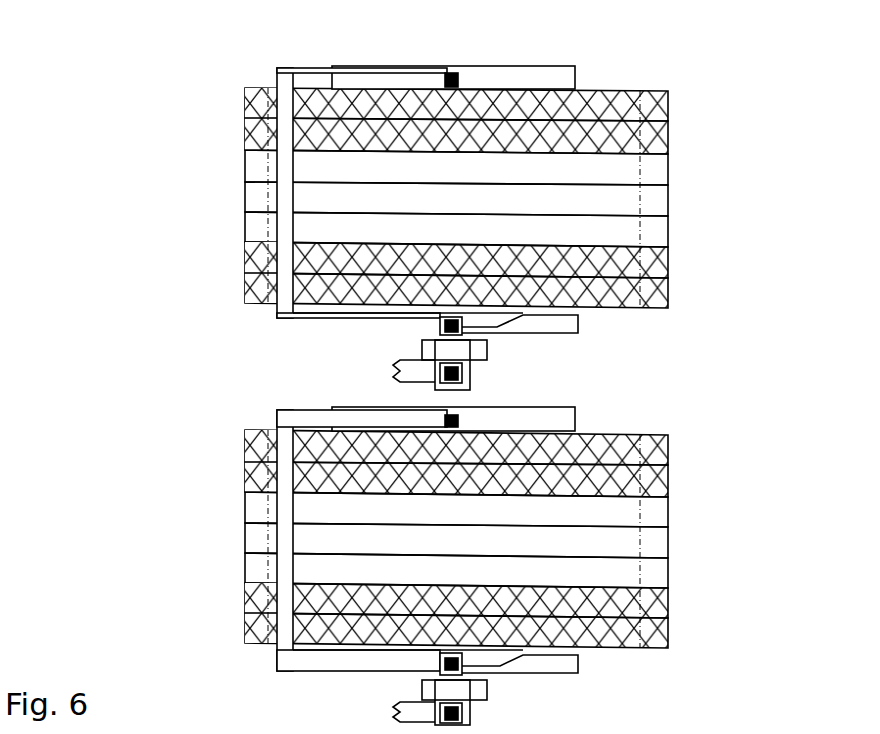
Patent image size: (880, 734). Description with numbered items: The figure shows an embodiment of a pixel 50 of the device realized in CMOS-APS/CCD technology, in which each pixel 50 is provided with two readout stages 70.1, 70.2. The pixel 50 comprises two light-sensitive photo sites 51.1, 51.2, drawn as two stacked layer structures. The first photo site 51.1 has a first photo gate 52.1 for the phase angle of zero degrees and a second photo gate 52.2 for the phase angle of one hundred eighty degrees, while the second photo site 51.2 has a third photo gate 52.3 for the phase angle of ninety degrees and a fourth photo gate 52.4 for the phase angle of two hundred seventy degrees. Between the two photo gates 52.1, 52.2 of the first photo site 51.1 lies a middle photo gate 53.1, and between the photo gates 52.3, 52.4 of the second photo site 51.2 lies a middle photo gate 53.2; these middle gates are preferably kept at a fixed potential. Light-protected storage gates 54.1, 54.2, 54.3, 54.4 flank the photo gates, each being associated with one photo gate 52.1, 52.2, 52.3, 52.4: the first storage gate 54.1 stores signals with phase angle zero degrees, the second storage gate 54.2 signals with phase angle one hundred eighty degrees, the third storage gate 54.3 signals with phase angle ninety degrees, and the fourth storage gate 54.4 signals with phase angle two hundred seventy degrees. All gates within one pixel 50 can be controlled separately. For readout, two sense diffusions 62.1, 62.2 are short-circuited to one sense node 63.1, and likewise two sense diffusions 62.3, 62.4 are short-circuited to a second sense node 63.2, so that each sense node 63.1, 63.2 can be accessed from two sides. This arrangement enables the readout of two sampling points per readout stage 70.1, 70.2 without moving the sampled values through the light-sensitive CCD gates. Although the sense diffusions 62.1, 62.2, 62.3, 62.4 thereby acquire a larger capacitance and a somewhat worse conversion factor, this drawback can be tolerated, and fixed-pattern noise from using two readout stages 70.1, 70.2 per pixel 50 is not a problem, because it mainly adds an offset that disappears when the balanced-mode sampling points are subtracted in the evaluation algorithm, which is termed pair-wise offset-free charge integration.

The pixel 50 is at (201, 87).
The first photo site 51.1 is at (406, 199).
The second photo site 51.2 is at (406, 540).
The first photo gate 52.1 is at (255, 173).
The second photo gate 52.2 is at (255, 229).
The third photo gate 52.3 is at (255, 512).
The fourth photo gate 52.4 is at (255, 568).
The middle photo gate 53.1 is at (255, 197).
The middle photo gate 53.2 is at (255, 535).
The first storage gate 54.1 is at (245, 135).
The second storage gate 54.2 is at (245, 262).
The third storage gate 54.3 is at (245, 475).
The fourth storage gate 54.4 is at (245, 597).
The sense diffusion 62.1 is at (562, 80).
The sense diffusion 62.2 is at (567, 316).
The sense diffusion 62.3 is at (577, 421).
The sense diffusion 62.4 is at (567, 656).
The sense node 63.1 is at (440, 325).
The sense node 63.2 is at (440, 672).
The readout stage 70.1 is at (514, 356).
The readout stage 70.2 is at (513, 698).